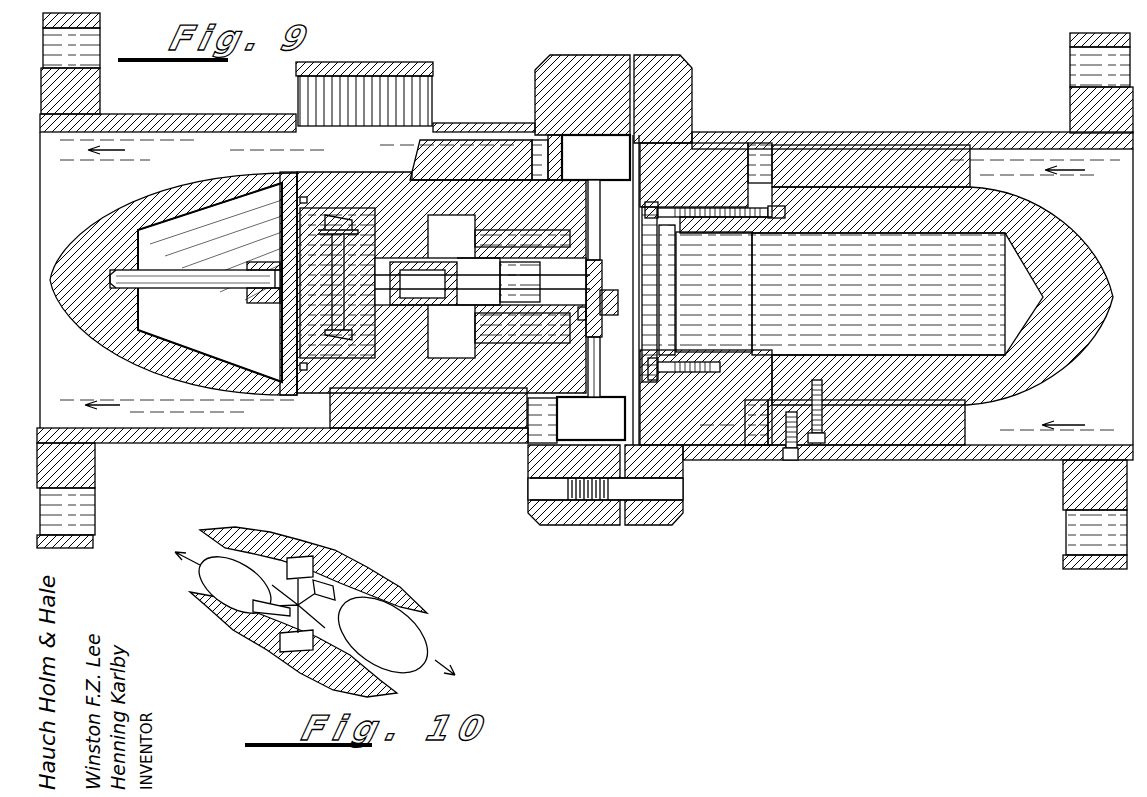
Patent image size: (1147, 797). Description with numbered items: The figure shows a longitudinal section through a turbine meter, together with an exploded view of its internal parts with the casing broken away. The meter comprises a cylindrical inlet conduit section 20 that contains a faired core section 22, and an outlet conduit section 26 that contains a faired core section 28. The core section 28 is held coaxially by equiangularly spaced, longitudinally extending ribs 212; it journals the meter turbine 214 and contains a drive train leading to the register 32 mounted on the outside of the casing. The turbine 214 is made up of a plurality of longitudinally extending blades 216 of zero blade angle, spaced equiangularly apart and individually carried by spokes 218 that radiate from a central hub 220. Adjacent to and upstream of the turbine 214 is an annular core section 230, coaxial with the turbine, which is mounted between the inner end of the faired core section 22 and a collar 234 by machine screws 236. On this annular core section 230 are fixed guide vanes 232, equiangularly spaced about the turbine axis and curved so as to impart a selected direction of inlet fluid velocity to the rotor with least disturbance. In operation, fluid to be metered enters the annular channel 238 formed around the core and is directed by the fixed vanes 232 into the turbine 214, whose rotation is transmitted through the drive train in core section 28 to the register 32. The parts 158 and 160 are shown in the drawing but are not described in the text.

In FIG. 9, the cylindrical inlet conduit section 20 is at (922, 132).
In FIG. 9, the faired core section 22 is at (1032, 212).
In FIG. 10, the faired core section 22 is at (407, 650).
In FIG. 9, the outlet conduit section 26 is at (489, 136).
In FIG. 9, the faired core section 28 is at (199, 170).
In FIG. 10, the faired core section 28 is at (230, 566).
In FIG. 9, the register 32 is at (435, 86).
In FIG. 9, the lower support block 158 is at (948, 432).
In FIG. 9, the housing 160 is at (450, 172).
In FIG. 9, the ribs 212 is at (351, 420).
In FIG. 9, the meter turbine 214 is at (620, 212).
In FIG. 9, the blades 216 is at (587, 145).
In FIG. 10, the blades 216 is at (313, 560).
In FIG. 9, the spokes 218 is at (601, 362).
In FIG. 9, the central hub 220 is at (585, 312).
In FIG. 9, the annular core section 230 is at (735, 238).
In FIG. 9, the fixed guide vanes 232 is at (736, 145).
In FIG. 10, the fixed guide vanes 232 is at (378, 598).
In FIG. 9, the collar 234 is at (667, 178).
In FIG. 9, the machine screws 236 is at (795, 232).
In FIG. 9, the annular channel 238 is at (776, 147).